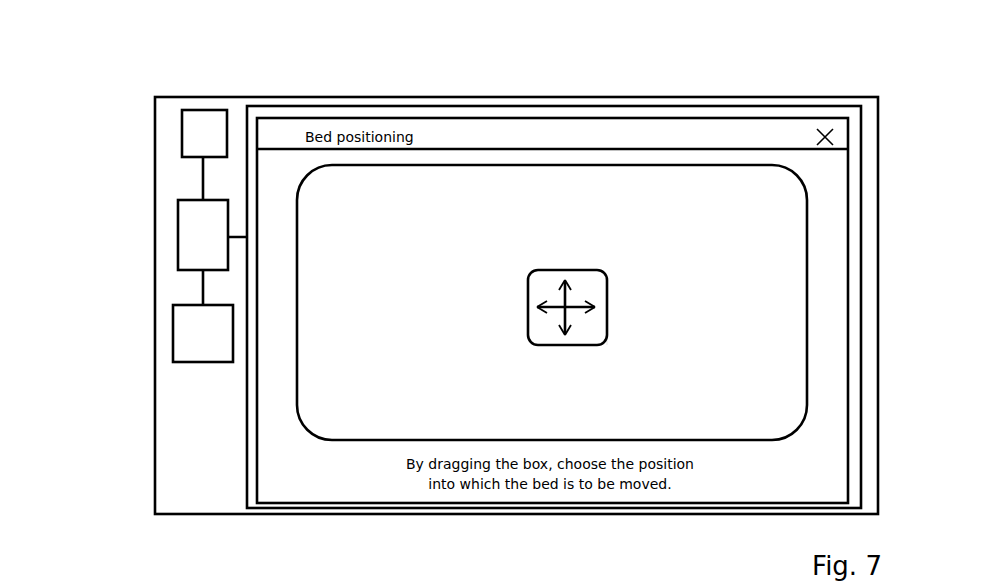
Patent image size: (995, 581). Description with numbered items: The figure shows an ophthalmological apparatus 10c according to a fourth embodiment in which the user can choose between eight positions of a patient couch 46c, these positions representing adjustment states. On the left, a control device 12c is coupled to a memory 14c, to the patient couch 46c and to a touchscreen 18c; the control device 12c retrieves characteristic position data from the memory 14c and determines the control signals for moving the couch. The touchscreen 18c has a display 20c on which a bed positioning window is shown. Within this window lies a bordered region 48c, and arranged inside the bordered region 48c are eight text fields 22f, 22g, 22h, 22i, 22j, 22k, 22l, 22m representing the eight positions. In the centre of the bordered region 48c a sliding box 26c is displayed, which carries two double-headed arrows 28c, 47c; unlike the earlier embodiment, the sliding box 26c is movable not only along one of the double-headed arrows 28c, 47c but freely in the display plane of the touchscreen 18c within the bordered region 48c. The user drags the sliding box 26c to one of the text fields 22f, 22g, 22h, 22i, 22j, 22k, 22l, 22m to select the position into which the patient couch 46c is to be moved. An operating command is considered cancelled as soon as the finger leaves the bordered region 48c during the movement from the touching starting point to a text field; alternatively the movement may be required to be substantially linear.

The ophthalmological apparatus 10c is at (602, 63).
The control device 12c is at (178, 243).
The memory 14c is at (182, 143).
The touchscreen 18c is at (248, 106).
The display 20c is at (278, 117).
The text field 22f is at (348, 172).
The text field 22g is at (485, 186).
The text field 22h is at (655, 178).
The text field 22i is at (750, 176).
The text field 22j is at (358, 430).
The text field 22k is at (497, 430).
The text field 22l is at (642, 430).
The text field 22m is at (752, 432).
The sliding box 26c is at (588, 270).
The double-headed arrow 28c is at (580, 312).
The patient couch 46c is at (173, 347).
The double-headed arrow 47c is at (607, 288).
The bordered region 48c is at (807, 375).